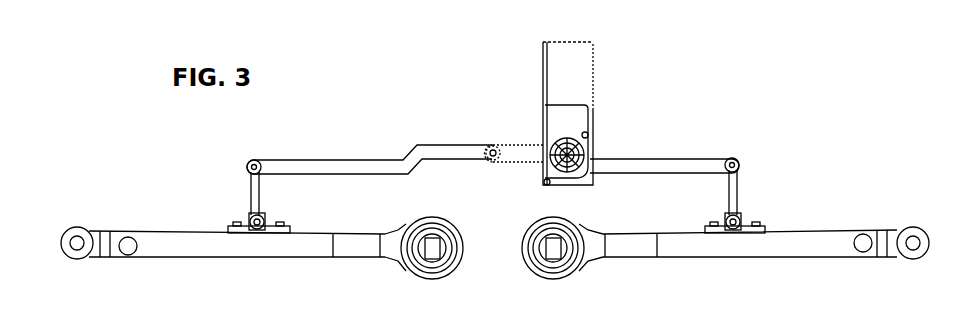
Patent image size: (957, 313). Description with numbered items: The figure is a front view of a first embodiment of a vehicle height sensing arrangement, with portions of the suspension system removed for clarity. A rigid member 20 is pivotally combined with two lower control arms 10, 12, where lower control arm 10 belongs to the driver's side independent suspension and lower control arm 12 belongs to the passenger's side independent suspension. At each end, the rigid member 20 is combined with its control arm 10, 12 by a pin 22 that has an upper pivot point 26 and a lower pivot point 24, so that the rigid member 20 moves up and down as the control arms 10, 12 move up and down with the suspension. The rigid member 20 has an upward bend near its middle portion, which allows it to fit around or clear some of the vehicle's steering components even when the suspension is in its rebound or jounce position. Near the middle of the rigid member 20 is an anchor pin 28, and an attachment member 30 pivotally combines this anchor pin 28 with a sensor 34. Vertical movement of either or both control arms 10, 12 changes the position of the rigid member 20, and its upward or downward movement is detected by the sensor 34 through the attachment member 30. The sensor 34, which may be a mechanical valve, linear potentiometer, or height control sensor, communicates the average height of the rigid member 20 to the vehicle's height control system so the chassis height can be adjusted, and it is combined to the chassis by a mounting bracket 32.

The lower control arm 10 is at (737, 245).
The lower control arm 12 is at (252, 248).
The rigid member 20 is at (445, 152).
The pin 22 is at (250, 197).
The lower pivot point 24 is at (251, 222).
The upper pivot point 26 is at (248, 164).
The anchor pin 28 is at (497, 160).
The attachment member 30 is at (525, 152).
The mounting bracket 32 is at (585, 77).
The sensor 34 is at (573, 122).